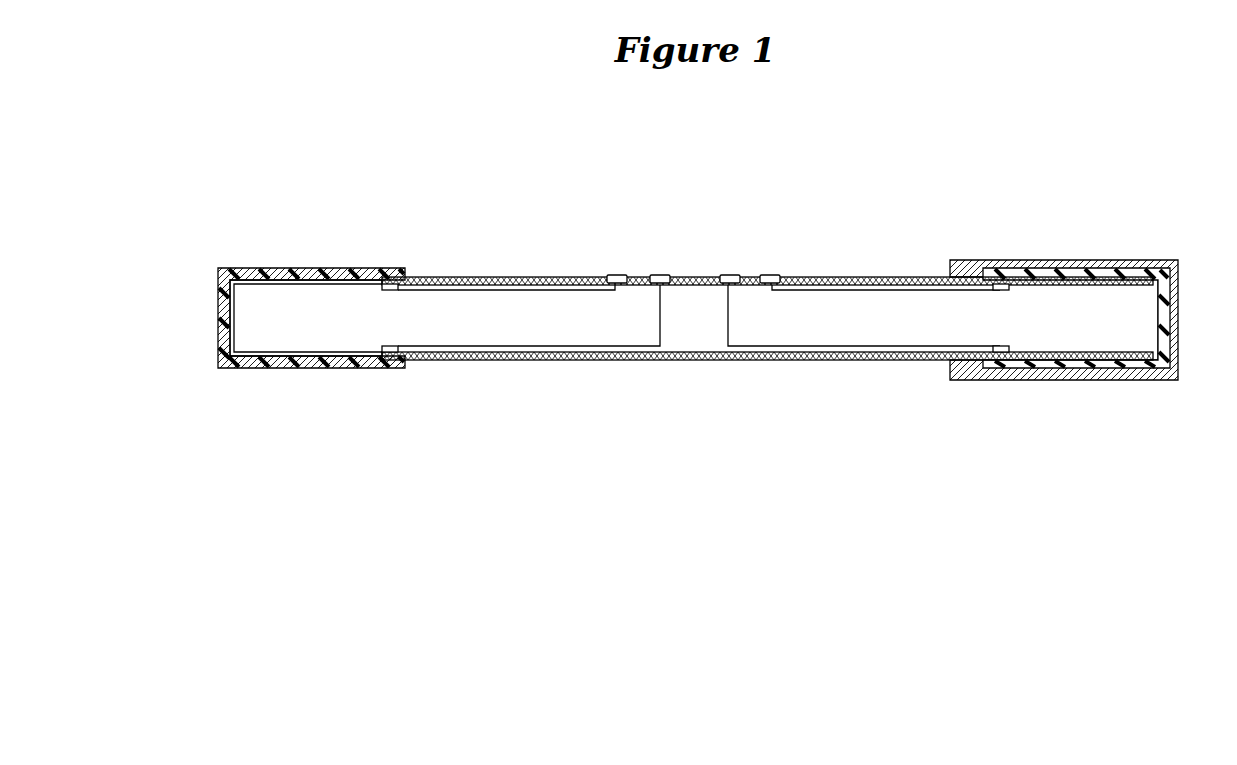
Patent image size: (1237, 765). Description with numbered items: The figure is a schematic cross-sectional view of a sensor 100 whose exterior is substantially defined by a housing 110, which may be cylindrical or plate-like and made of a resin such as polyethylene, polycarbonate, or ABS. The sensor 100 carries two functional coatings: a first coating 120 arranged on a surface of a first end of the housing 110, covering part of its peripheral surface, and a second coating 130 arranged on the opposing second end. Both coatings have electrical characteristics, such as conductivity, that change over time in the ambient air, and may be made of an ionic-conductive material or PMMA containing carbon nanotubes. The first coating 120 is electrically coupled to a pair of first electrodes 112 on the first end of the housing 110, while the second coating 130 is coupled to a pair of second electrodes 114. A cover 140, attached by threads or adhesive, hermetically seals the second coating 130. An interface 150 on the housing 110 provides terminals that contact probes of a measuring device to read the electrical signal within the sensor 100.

The sensor 100 is at (838, 220).
The housing 110 is at (603, 362).
The first electrodes 112 is at (380, 351).
The right connection pads 114 is at (1006, 350).
The first coating 120 is at (350, 268).
The second coating 130 is at (1093, 260).
The cover 140 is at (885, 276).
The interface 150 is at (603, 259).